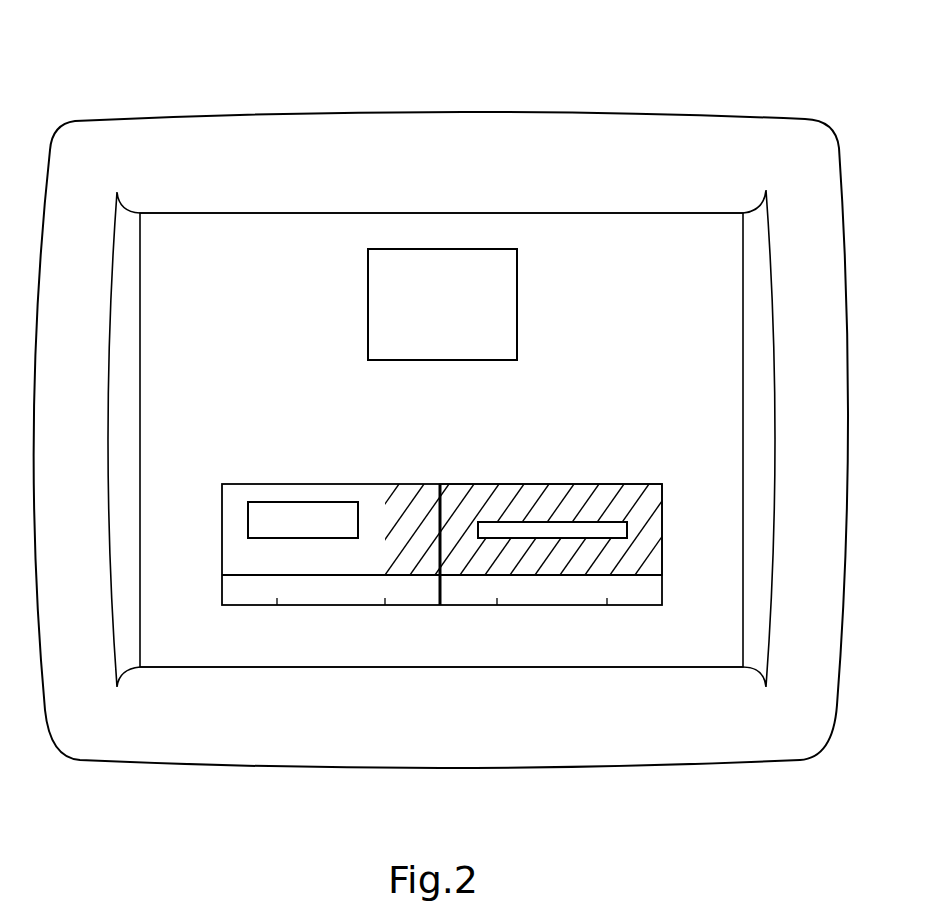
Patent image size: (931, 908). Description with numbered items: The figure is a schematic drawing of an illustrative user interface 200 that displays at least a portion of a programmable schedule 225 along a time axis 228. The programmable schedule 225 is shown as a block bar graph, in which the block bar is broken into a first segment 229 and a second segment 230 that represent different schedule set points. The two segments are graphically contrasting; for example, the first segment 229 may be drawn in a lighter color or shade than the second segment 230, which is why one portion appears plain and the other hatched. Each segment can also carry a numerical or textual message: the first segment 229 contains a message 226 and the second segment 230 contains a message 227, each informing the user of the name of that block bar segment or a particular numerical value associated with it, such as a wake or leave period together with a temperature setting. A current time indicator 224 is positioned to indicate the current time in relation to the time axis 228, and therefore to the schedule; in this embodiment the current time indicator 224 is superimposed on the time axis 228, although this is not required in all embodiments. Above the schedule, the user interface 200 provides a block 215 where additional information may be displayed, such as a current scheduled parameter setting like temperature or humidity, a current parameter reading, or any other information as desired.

The user interface 200 is at (740, 82).
The block 215 is at (418, 319).
The current time indicator 224 is at (438, 497).
The programmable schedule 225 is at (563, 466).
The message 226 is at (301, 512).
The message 227 is at (622, 522).
The time axis 228 is at (412, 605).
The first segment 229 is at (226, 505).
The second segment 230 is at (449, 505).